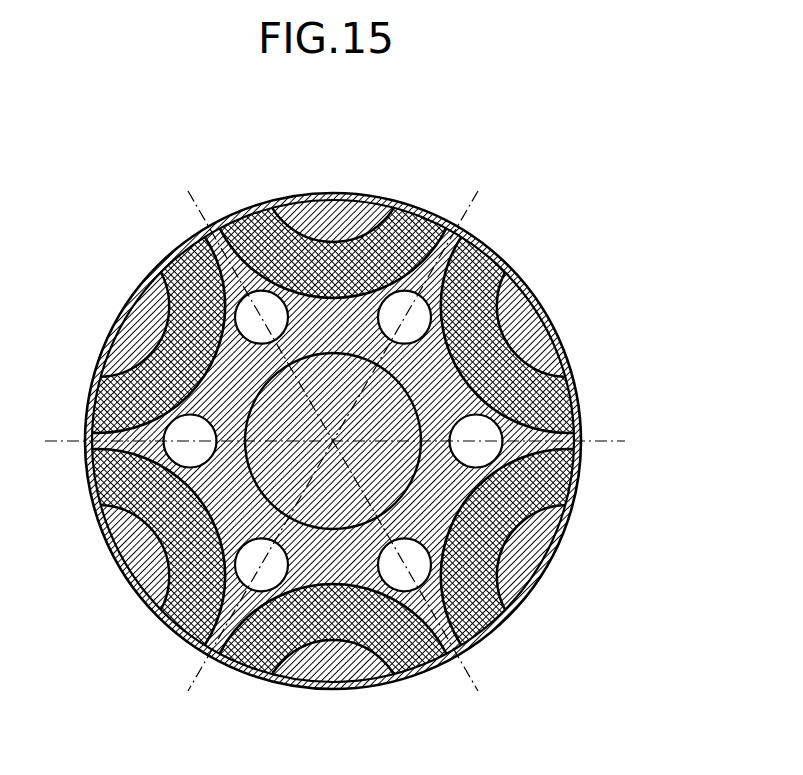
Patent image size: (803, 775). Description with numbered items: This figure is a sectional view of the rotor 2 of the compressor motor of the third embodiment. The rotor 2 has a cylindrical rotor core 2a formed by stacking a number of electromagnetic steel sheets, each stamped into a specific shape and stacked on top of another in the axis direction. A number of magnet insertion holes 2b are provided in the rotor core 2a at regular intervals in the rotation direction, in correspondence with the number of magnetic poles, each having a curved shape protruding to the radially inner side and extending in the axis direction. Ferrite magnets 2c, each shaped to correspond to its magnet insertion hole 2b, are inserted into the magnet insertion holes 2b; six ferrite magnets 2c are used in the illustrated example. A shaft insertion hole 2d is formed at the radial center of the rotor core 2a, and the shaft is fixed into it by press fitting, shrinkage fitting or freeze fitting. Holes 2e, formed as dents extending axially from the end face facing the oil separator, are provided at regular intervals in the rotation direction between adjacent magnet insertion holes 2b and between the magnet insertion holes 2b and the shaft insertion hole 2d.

The rotor 2 is at (498, 146).
The rotor core 2a is at (523, 275).
The magnet insertion hole 2b is at (503, 297).
The ferrite magnet 2c is at (478, 333).
The shaft insertion hole 2d is at (515, 347).
The hole 2e is at (568, 375).